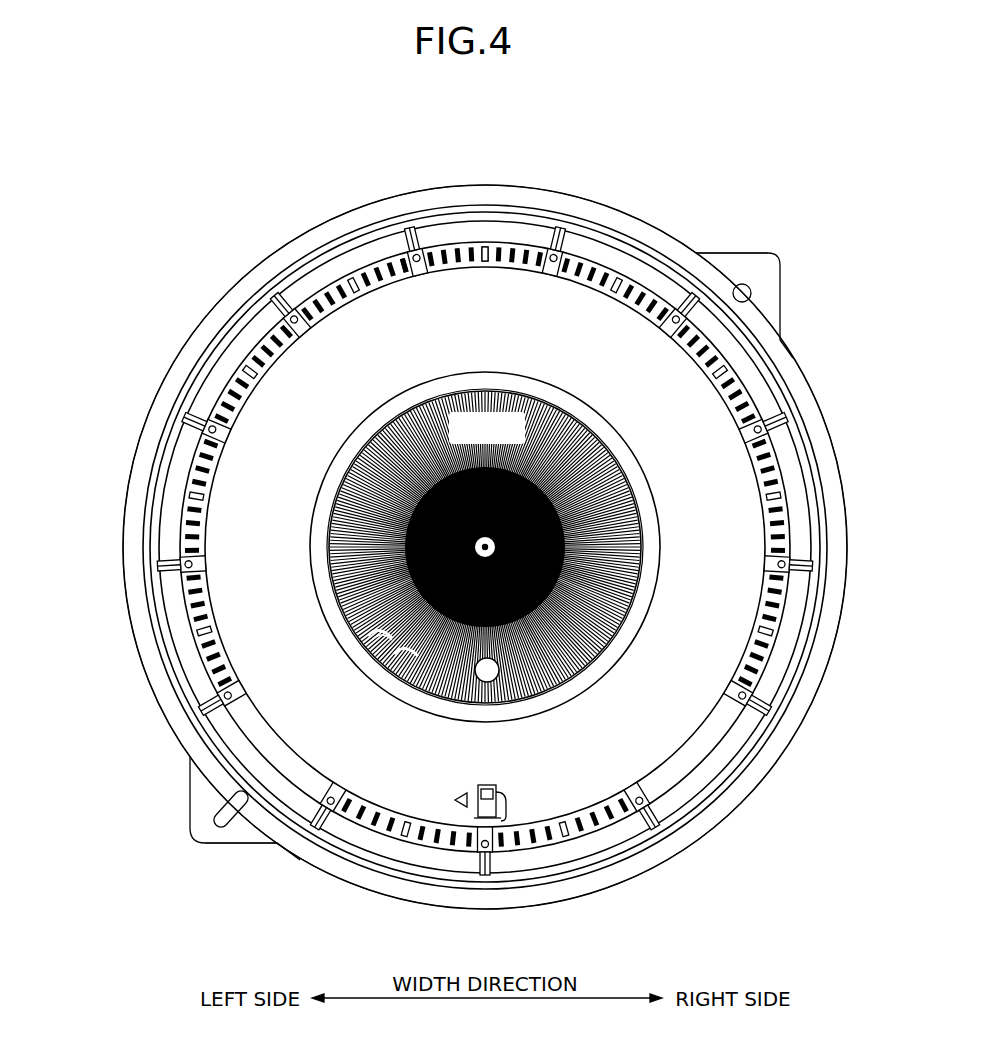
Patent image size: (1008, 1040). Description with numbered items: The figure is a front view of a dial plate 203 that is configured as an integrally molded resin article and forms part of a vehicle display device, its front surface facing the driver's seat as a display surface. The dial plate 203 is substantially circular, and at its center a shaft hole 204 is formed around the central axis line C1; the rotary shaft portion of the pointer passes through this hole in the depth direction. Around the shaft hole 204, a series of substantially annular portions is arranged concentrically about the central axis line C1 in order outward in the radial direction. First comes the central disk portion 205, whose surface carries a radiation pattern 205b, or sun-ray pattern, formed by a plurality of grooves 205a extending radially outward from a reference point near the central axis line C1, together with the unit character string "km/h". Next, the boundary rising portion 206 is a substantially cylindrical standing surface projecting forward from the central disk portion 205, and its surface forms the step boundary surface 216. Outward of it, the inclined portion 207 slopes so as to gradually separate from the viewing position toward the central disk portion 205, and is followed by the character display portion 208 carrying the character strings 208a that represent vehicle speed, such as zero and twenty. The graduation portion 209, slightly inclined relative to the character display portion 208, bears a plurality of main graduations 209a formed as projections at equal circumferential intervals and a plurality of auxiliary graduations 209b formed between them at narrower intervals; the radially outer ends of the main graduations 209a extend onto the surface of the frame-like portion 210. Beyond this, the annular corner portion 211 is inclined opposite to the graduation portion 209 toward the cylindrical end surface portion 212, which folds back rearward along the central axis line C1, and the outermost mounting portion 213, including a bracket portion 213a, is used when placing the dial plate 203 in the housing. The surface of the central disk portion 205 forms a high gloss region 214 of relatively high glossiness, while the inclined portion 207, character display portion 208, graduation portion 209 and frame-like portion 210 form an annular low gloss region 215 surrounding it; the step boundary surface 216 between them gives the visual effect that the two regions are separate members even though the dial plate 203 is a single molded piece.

The dial plate 203 is at (427, 129).
The shaft hole 204 is at (498, 553).
The central disk portion 205 is at (495, 501).
The grooves 205a is at (406, 654).
The radiation pattern 205b is at (382, 637).
The boundary rising portion 206 is at (362, 458).
The step boundary surface 216 is at (485, 547).
The inclined portion 207 is at (325, 495).
The character display portion 208 is at (235, 522).
The character strings 208a is at (683, 362).
The graduation portion 209 is at (165, 552).
The main graduations 209a is at (672, 300).
The auxiliary graduations 209b is at (447, 243).
The frame-like portion 210 is at (137, 558).
The annular corner portion 211 is at (152, 578).
The cylindrical end surface portion 212 is at (140, 625).
The mounting portion 213 is at (135, 680).
The bracket portion 213a is at (750, 266).
The high gloss region 214 is at (605, 456).
The low gloss region 215 is at (722, 478).
The central axis line C1 is at (498, 547).